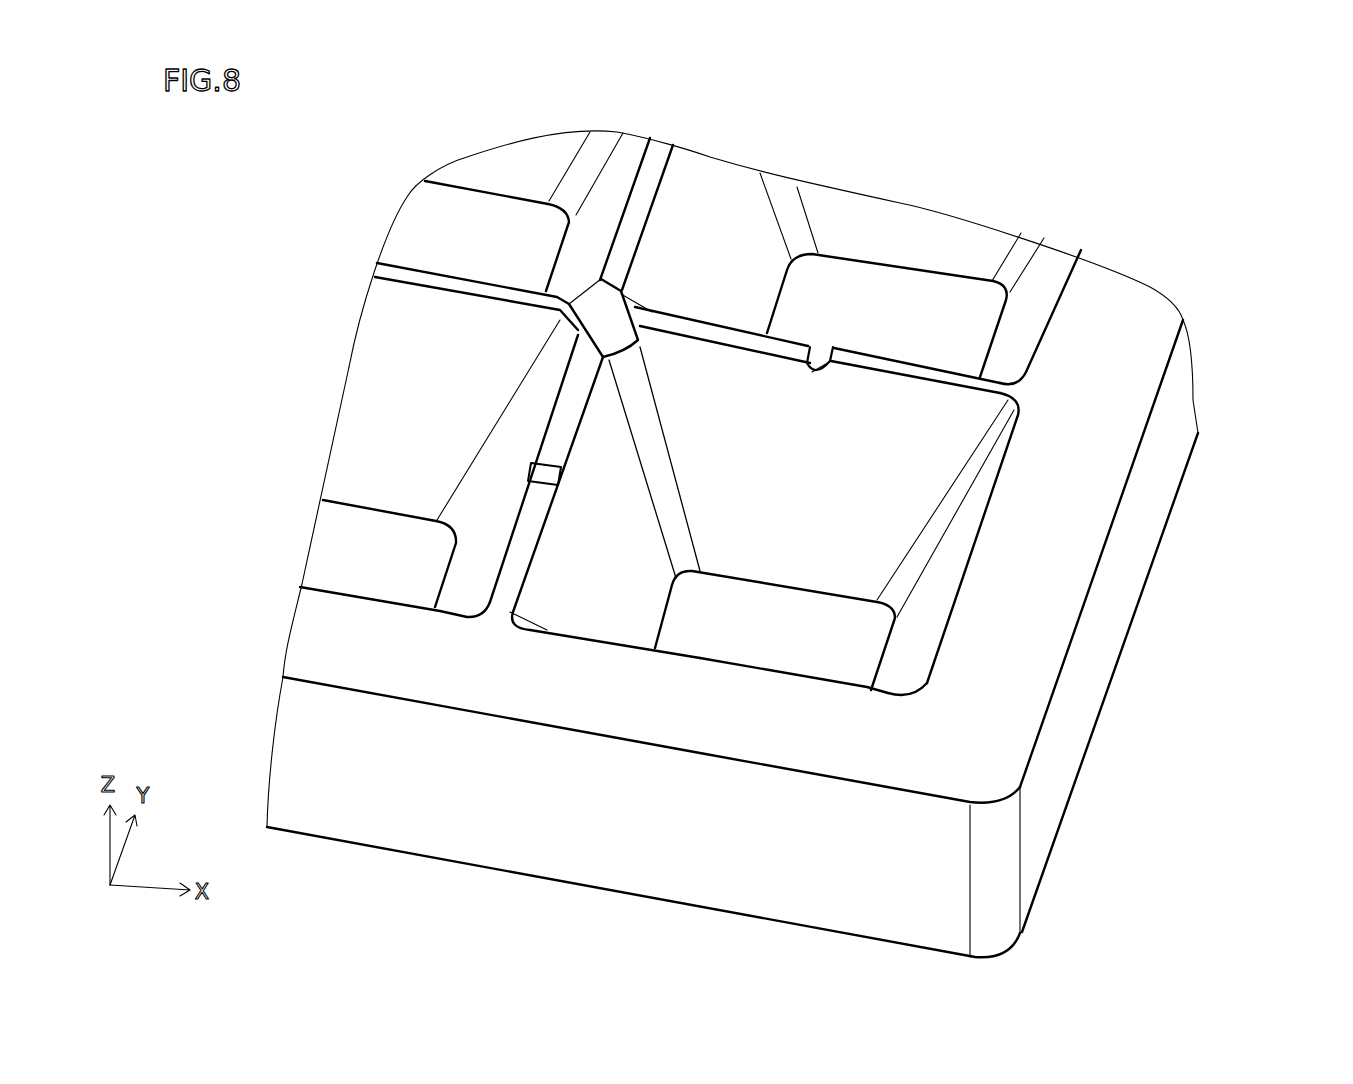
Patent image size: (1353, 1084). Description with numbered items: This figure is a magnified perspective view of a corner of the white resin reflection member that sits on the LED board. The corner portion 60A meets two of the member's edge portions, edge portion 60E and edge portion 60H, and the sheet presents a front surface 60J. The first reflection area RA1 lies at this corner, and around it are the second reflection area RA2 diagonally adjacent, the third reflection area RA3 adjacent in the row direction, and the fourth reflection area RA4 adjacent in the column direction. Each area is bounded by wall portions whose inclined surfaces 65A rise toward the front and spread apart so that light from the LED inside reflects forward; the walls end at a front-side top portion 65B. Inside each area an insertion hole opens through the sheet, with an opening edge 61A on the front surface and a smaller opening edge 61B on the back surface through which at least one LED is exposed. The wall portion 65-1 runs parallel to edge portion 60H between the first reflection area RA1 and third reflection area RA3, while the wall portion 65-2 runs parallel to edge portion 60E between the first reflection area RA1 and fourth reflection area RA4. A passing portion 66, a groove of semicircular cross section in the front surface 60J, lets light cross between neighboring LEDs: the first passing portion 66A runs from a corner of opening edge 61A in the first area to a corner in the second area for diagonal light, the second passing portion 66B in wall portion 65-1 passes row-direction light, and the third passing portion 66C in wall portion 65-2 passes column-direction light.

The passing portion 66 is at (737, 84).
The first passing portion 66A is at (603, 317).
The second passing portion 66B is at (533, 460).
The third passing portion 66C is at (820, 350).
The wall portion 65-1 is at (580, 553).
The wall portion 65-2 is at (852, 393).
The inclined surface 65A is at (627, 600).
The front-side top portion 65B is at (522, 537).
The corner portion 60A is at (997, 907).
The edge portion 60E is at (385, 825).
The edge portion 60H is at (1120, 588).
The front surface 60J is at (1123, 313).
The opening edge 61A is at (975, 572).
The opening edge 61B is at (810, 592).
The first reflection area RA1 is at (870, 497).
The second reflection area RA2 is at (447, 240).
The third reflection area RA3 is at (377, 453).
The fourth reflection area RA4 is at (893, 300).